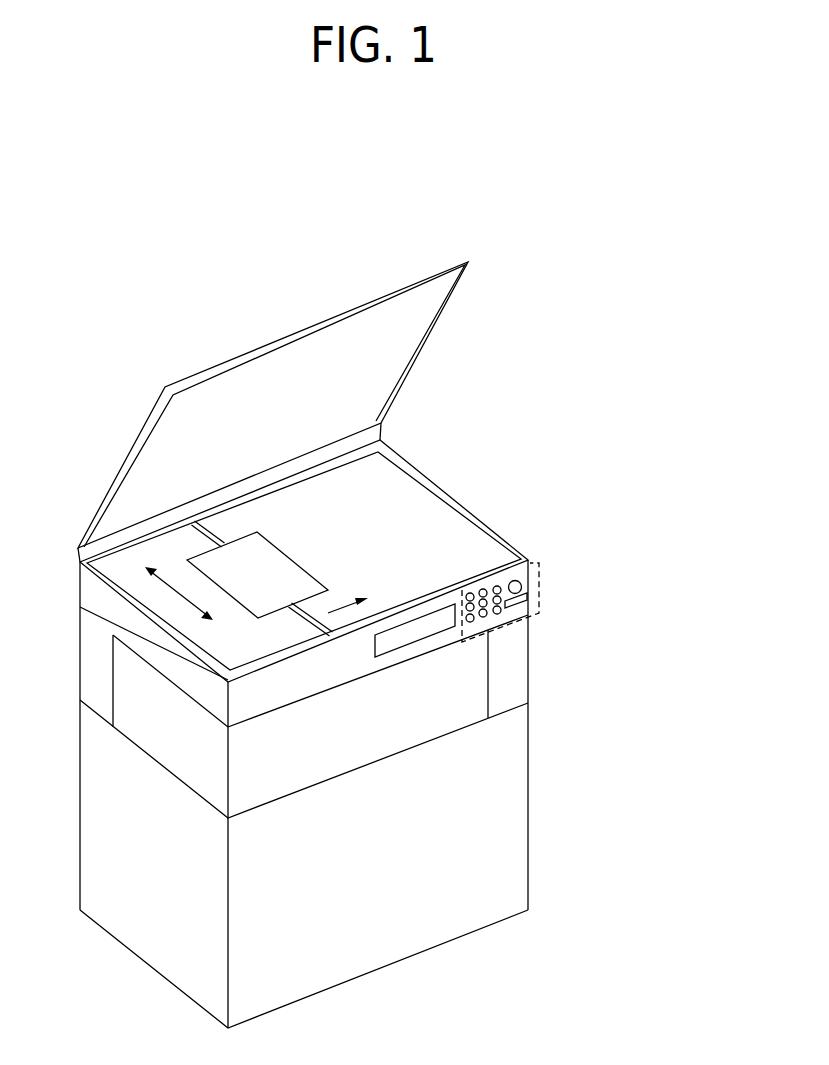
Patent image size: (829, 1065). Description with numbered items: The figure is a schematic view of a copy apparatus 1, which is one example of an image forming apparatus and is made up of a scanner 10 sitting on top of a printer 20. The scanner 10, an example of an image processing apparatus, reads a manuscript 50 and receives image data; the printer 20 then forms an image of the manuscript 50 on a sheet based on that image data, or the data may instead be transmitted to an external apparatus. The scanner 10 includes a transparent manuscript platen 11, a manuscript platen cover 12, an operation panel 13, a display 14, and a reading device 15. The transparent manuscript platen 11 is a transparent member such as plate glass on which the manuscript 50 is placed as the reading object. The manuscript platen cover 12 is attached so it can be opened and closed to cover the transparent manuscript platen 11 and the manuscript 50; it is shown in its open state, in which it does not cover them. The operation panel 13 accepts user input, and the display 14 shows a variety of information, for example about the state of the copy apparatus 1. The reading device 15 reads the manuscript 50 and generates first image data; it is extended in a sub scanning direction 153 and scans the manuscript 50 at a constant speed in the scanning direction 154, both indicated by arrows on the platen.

The copy apparatus 1 is at (97, 280).
The scanner 10 is at (580, 270).
The transparent manuscript platen 11 is at (460, 517).
The manuscript platen cover 12 is at (472, 265).
The operation panel 13 is at (505, 628).
The display 14 is at (422, 632).
The reading device 15 is at (302, 623).
The printer 20 is at (580, 607).
The manuscript 50 is at (282, 552).
The sub scanning direction 153 is at (165, 585).
The scanning direction 154 is at (347, 607).